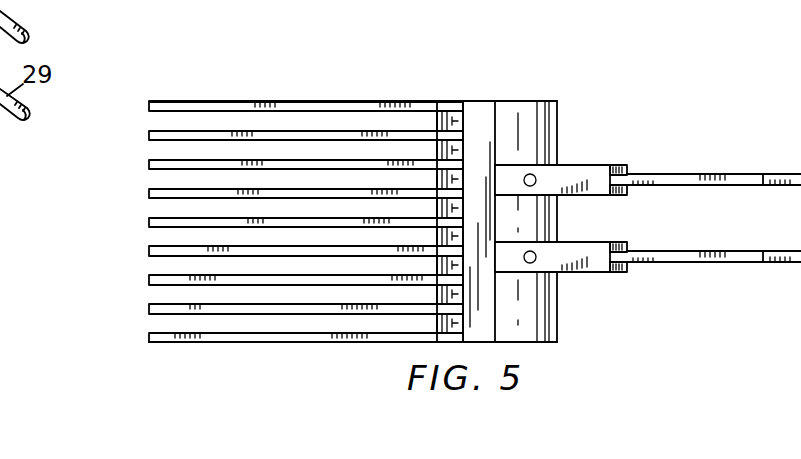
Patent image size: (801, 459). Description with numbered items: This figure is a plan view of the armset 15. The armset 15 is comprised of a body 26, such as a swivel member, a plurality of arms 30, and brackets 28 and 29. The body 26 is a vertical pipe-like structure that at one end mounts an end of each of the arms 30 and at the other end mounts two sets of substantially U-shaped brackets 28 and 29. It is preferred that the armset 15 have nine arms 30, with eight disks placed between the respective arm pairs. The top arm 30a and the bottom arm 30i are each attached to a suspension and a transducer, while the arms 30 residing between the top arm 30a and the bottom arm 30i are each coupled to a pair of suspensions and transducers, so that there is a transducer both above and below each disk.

The armset 15 is at (454, 68).
The body 26 is at (558, 120).
The bracket 28 is at (600, 165).
The bracket 29 is at (600, 242).
The arms 30 is at (149, 338).
The top arm 30a is at (313, 101).
The bottom arm 30i is at (307, 342).